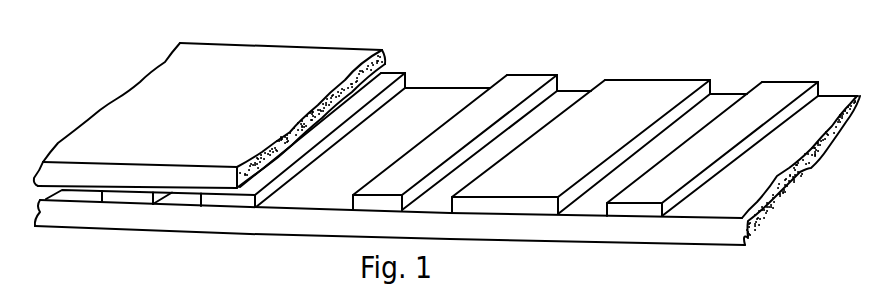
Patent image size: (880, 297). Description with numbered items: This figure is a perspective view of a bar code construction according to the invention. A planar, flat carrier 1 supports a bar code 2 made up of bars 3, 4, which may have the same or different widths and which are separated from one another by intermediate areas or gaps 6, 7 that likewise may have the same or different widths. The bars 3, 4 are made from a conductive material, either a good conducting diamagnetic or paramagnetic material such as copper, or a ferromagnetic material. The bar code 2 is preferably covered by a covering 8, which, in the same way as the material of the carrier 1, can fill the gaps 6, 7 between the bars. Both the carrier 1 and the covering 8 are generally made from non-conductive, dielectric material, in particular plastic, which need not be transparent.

The carrier 1 is at (95, 218).
The bar code 2 is at (710, 67).
The bar 3 is at (777, 102).
The bar 4 is at (630, 97).
The gap 6 is at (565, 97).
The gap 7 is at (432, 100).
The covering 8 is at (67, 173).